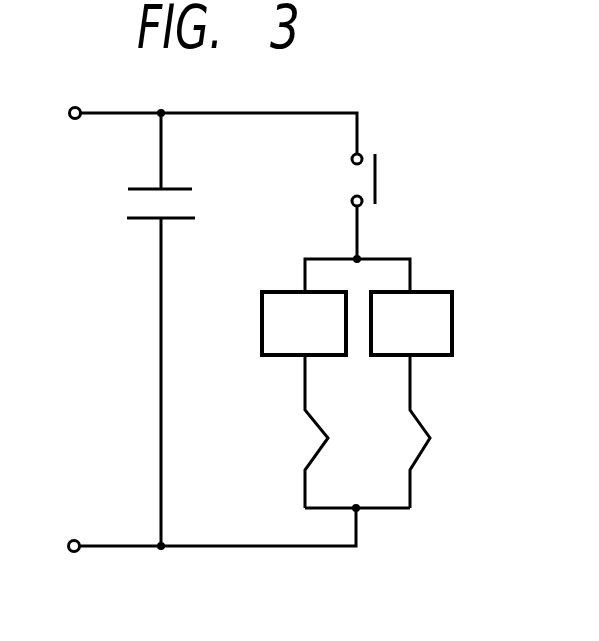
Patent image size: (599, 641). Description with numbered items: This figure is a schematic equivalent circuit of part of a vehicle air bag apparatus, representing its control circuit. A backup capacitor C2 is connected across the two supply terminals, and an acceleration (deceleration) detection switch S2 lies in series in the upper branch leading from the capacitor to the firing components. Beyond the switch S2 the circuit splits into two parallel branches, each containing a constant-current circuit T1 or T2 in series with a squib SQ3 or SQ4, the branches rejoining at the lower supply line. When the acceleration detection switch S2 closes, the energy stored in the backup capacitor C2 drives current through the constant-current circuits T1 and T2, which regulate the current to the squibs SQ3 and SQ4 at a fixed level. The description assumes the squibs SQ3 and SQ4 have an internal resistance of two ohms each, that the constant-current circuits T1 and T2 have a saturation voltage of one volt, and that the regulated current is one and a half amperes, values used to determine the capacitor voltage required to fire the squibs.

The backup capacitor C2 is at (192, 189).
The acceleration detection switch S2 is at (375, 179).
The constant-current circuit T1 is at (262, 308).
The constant-current circuit T2 is at (452, 305).
The squib SQ3 is at (305, 419).
The squib SQ4 is at (420, 423).